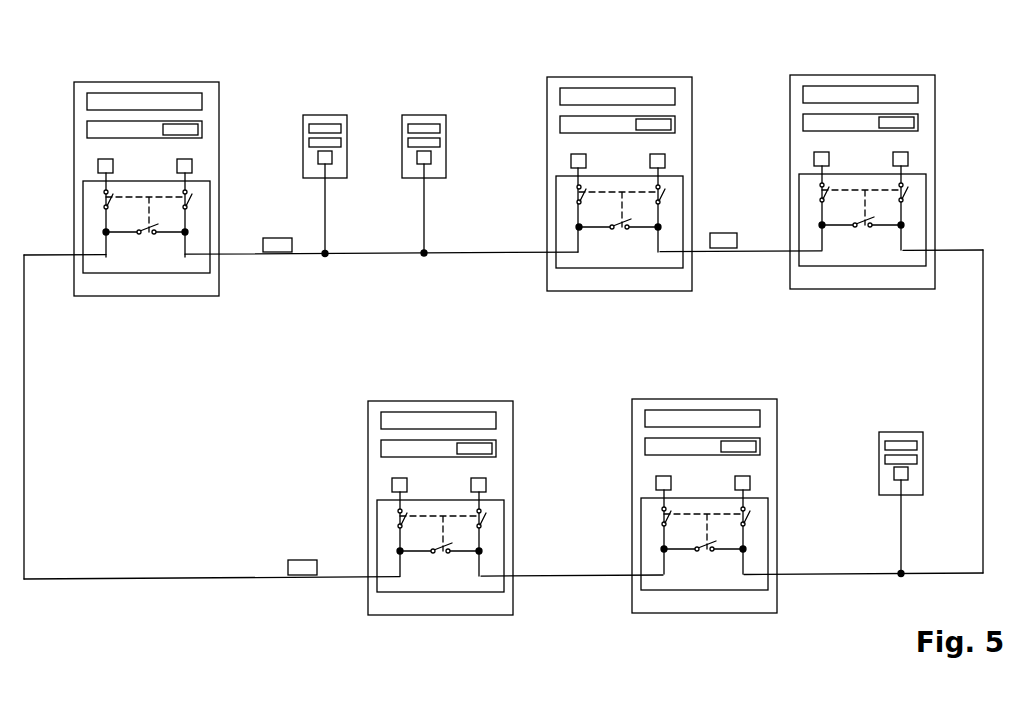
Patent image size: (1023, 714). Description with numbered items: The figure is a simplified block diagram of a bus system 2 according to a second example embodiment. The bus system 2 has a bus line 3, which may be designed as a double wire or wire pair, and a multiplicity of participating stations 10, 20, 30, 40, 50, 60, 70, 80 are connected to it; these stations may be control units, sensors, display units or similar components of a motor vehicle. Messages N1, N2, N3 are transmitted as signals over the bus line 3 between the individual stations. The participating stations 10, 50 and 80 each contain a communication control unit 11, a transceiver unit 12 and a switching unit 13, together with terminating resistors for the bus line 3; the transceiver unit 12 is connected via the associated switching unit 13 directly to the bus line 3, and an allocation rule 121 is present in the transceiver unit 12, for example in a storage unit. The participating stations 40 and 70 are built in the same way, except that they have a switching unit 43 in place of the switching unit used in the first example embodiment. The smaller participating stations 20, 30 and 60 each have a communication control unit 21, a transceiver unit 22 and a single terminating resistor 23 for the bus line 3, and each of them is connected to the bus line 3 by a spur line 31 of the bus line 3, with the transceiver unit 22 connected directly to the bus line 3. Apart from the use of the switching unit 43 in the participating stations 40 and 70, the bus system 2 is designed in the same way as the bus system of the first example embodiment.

The bus system 2 is at (948, 72).
The bus line 3 is at (475, 257).
The participating station 10 is at (145, 82).
The communication control unit 11 is at (87, 100).
The transceiver unit 12 is at (87, 129).
The allocation rule 121 is at (198, 129).
The switching unit 13 is at (83, 220).
The participating station 20 is at (322, 115).
The communication control unit 21 is at (341, 128).
The transceiver unit 22 is at (341, 142).
The terminating resistor 23 is at (332, 158).
The participating station 30 is at (421, 115).
The spur line 31 is at (325, 208).
The participating station 40 is at (617, 77).
The switching unit 43 is at (556, 216).
The participating station 50 is at (858, 75).
The participating station 60 is at (898, 432).
The participating station 70 is at (702, 399).
The participating station 80 is at (437, 401).
The message N1 is at (277, 238).
The message N2 is at (723, 233).
The message N3 is at (302, 560).